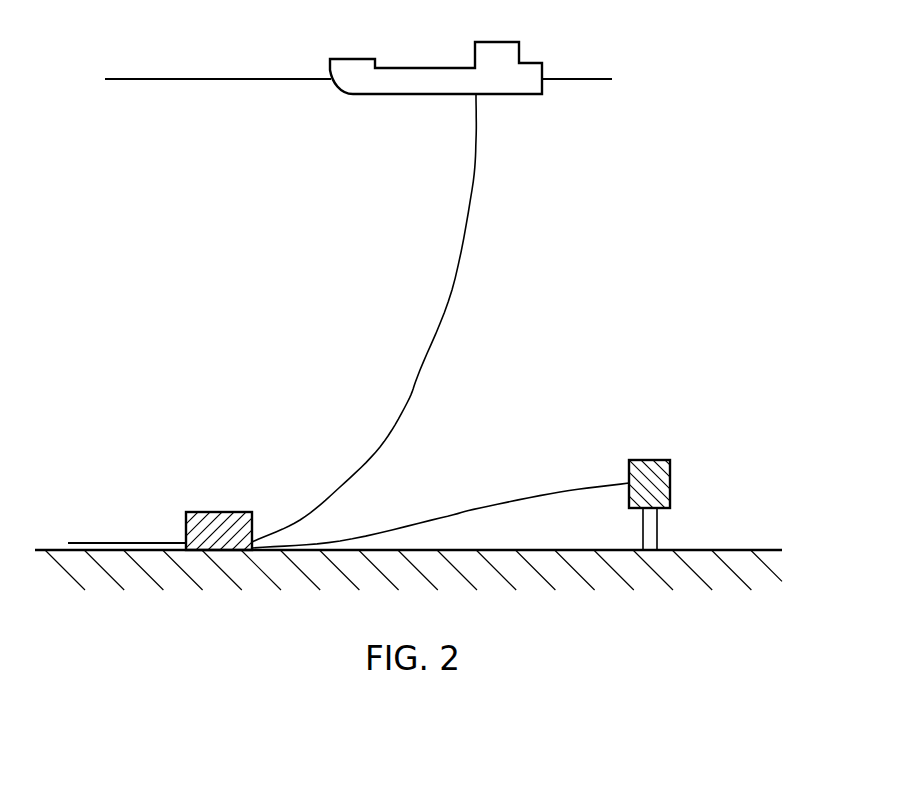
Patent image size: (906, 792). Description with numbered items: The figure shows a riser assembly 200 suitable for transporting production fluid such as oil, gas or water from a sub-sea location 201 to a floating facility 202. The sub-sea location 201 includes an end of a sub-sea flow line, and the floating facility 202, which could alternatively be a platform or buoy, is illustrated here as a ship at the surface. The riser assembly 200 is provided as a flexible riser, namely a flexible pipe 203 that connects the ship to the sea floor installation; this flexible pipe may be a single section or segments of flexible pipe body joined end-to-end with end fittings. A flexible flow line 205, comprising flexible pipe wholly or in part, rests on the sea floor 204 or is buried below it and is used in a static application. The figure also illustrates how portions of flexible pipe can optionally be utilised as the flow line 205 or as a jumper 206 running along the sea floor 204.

The riser assembly 200 is at (493, 172).
The sub-sea location 201 is at (227, 512).
The floating facility 202 is at (352, 59).
The flexible pipe 203 is at (415, 377).
The sea floor 204 is at (725, 550).
The flexible flow line 205 is at (130, 543).
The jumper 206 is at (562, 490).